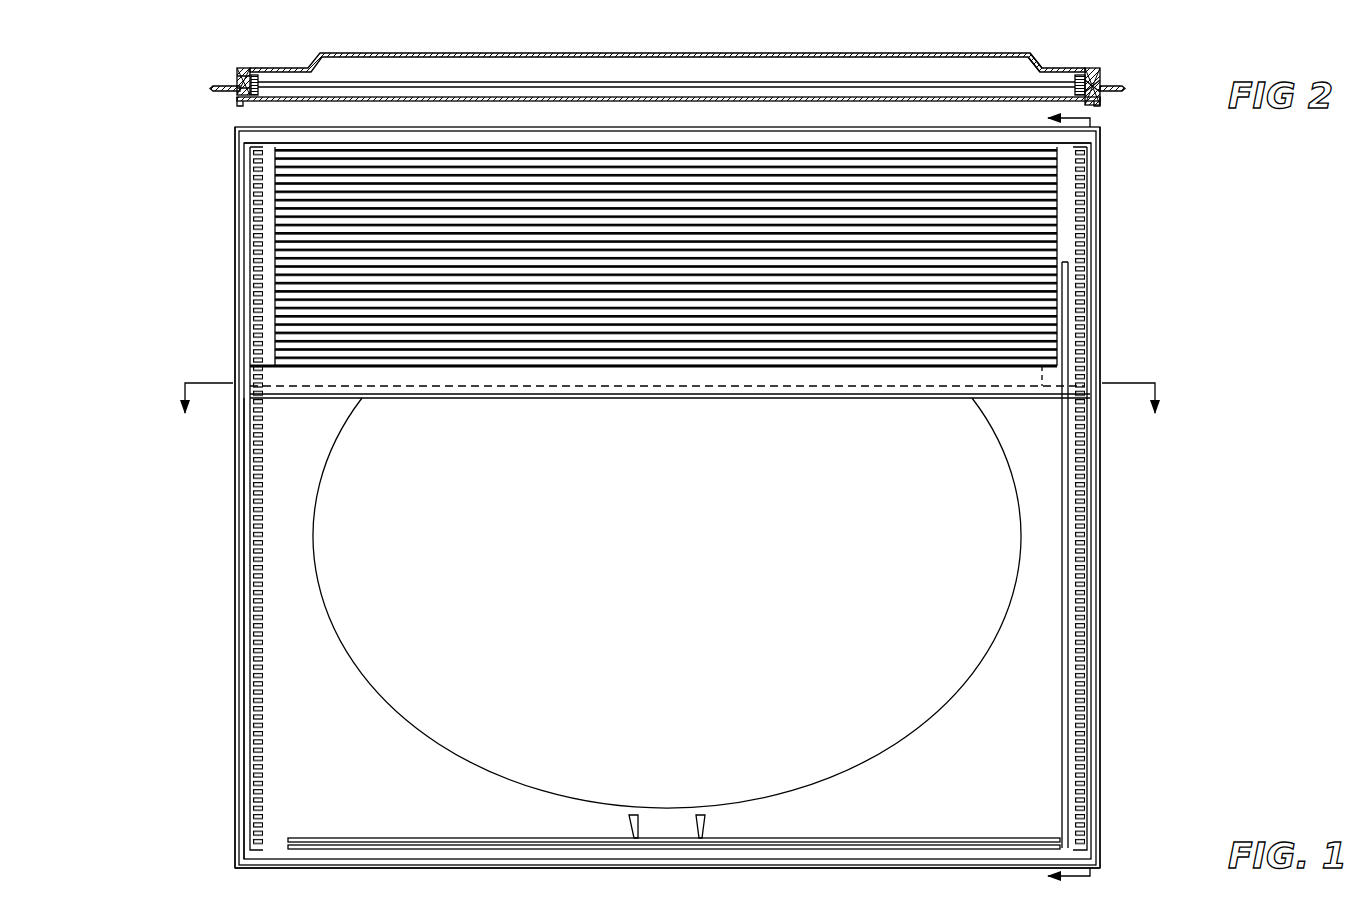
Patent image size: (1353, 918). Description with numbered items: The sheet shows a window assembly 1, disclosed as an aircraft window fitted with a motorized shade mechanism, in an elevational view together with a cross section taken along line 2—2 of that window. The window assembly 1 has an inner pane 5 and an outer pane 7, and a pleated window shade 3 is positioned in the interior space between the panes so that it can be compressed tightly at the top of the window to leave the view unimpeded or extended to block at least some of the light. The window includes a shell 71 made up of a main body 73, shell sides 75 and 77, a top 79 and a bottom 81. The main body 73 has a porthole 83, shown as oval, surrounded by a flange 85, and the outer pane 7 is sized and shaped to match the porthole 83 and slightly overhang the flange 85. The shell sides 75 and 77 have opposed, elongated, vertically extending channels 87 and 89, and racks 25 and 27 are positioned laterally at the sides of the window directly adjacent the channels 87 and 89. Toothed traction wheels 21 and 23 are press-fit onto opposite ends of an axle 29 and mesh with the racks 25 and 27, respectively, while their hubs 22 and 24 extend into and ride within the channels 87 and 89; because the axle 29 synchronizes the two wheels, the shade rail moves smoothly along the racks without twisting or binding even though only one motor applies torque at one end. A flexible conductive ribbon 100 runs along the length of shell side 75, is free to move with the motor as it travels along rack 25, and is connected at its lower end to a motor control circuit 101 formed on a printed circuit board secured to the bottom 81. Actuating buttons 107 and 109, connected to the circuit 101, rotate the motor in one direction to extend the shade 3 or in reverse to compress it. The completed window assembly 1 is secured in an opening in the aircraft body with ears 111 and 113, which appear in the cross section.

In FIG. 2, the window assembly 1 is at (1120, 200).
In FIG. 1, the section line 2— 2 is at (667, 413).
In FIG. 2, the window shade 3 is at (1058, 117).
In FIG. 1, the window shade 3 is at (346, 289).
In FIG. 2, the inner pane 5 is at (516, 102).
In FIG. 2, the outer pane 7 is at (516, 61).
In FIG. 2, the toothed traction wheel 21 is at (1064, 84).
In FIG. 2, the hub 22 is at (1102, 83).
In FIG. 2, the toothed traction wheel 23 is at (262, 78).
In FIG. 2, the hub 24 is at (244, 72).
In FIG. 1, the rack 25 is at (1102, 236).
In FIG. 1, the rack 27 is at (252, 243).
In FIG. 2, the axle 29 is at (822, 83).
In FIG. 1, the shell 71 is at (1016, 738).
In FIG. 1, the main body 73 is at (348, 773).
In FIG. 1, the shell side 75 is at (1122, 579).
In FIG. 1, the shell side 77 is at (234, 639).
In FIG. 1, the top 79 is at (236, 141).
In FIG. 1, the bottom 81 is at (1106, 856).
In FIG. 1, the porthole 83 is at (655, 699).
In FIG. 2, the flange 85 is at (1042, 62).
In FIG. 2, the channel 87 is at (1122, 92).
In FIG. 2, the channel 89 is at (238, 83).
In FIG. 1, the flexible conductive ribbon 100 is at (1062, 683).
In FIG. 1, the motor control circuit 101 is at (851, 838).
In FIG. 1, the actuating button 107 is at (703, 829).
In FIG. 1, the actuating button 109 is at (628, 829).
In FIG. 2, the ear 111 is at (1115, 96).
In FIG. 2, the ear 113 is at (222, 93).